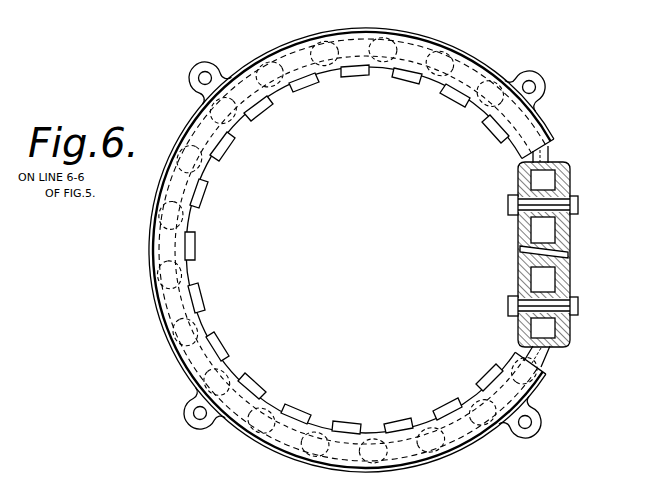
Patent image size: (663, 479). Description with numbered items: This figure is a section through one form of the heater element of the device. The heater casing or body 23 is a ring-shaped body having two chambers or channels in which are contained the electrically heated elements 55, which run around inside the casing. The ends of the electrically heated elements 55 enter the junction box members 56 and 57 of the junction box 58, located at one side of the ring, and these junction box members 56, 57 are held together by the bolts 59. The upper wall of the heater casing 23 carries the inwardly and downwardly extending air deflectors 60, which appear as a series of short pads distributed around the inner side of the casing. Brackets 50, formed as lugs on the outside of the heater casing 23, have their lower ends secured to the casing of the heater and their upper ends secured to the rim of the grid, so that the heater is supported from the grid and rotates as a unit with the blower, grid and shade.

The heater casing 23 is at (327, 250).
The brackets 50 is at (545, 88).
The electrically heated elements 55 is at (549, 152).
The junction box member 56 is at (571, 178).
The junction box member 57 is at (526, 244).
The junction box 58 is at (567, 289).
The bolts 59 is at (510, 206).
The air deflectors 60 is at (377, 71).